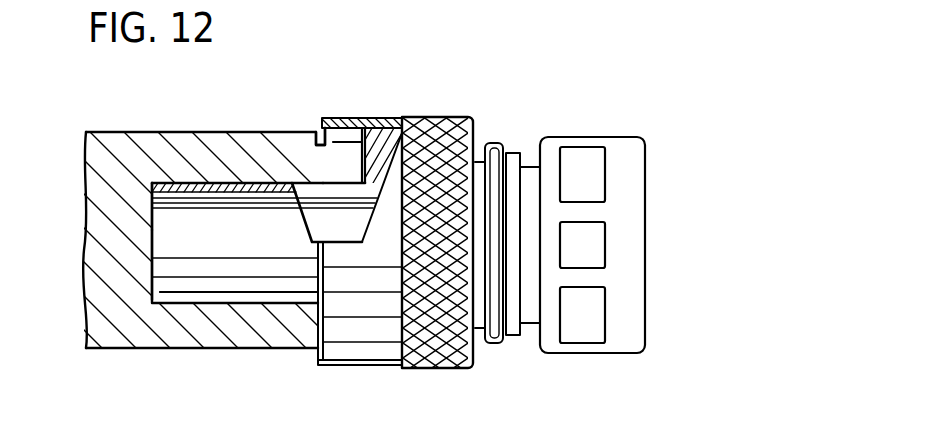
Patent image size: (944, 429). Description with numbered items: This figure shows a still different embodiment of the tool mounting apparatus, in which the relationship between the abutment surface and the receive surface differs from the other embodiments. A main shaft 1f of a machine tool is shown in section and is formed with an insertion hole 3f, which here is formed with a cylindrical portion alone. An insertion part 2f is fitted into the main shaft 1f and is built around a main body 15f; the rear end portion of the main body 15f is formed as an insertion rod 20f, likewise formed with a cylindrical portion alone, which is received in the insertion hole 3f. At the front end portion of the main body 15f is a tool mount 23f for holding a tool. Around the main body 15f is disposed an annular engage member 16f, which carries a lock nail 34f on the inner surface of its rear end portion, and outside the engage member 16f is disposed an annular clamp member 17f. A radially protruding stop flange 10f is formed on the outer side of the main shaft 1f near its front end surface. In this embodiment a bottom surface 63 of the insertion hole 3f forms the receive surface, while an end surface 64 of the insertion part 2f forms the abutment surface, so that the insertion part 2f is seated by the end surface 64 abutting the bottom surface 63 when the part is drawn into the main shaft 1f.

The main shaft 1f is at (95, 136).
The insertion part 2f is at (516, 359).
The insertion hole 3f is at (210, 187).
The stop flange 10f is at (348, 143).
The main body 15f is at (372, 178).
The annular engage member 16f is at (377, 135).
The annular clamp member 17f is at (424, 120).
The insertion rod 20f is at (232, 212).
The tool mount 23f is at (598, 137).
The lock nail 34f is at (320, 139).
The bottom surface 63 is at (162, 216).
The end surface 64 is at (146, 251).